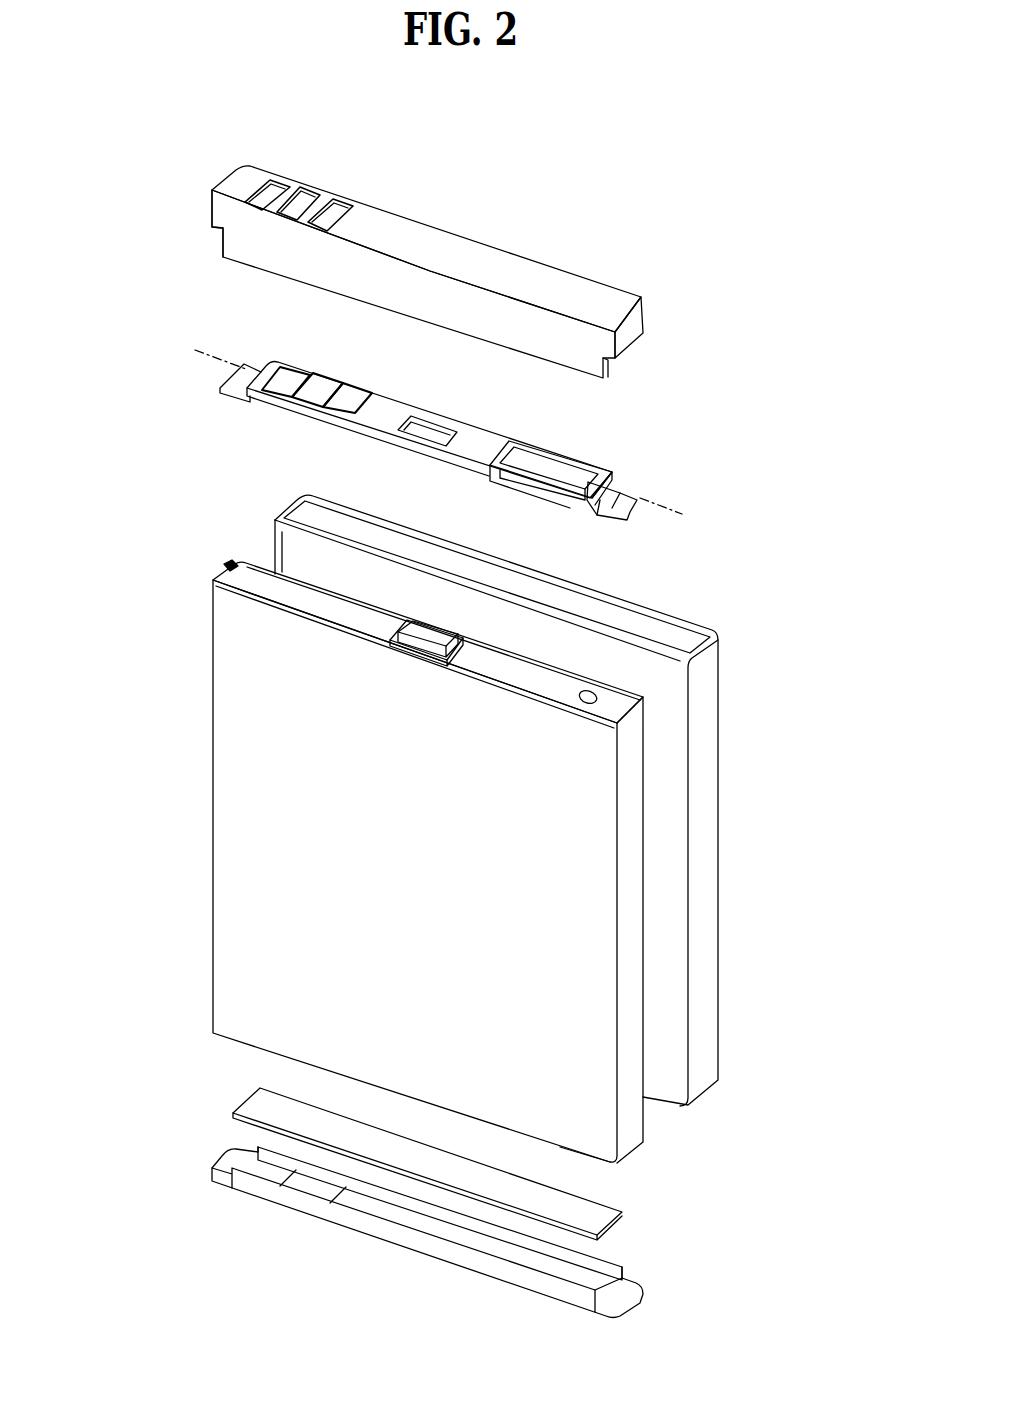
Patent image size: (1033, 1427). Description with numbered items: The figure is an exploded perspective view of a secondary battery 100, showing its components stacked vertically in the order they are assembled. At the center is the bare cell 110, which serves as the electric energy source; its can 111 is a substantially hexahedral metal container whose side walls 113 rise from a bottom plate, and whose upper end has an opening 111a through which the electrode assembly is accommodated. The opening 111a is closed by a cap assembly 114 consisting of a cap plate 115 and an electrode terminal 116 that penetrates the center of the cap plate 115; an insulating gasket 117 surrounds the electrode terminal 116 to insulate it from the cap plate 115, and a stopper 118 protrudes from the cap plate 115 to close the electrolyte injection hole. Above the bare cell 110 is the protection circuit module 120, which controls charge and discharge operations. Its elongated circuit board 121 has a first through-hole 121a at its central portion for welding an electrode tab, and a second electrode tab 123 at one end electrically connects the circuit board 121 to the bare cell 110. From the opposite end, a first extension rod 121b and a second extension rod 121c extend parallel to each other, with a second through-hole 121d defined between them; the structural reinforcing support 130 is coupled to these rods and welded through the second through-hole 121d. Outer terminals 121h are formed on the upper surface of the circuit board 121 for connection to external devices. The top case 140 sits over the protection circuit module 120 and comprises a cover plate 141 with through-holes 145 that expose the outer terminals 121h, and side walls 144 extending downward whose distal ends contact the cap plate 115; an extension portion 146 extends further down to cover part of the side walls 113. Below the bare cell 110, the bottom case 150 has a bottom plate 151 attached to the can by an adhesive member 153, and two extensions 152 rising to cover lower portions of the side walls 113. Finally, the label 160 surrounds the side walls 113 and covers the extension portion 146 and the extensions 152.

The secondary battery 100 is at (718, 151).
The bare cell 110 is at (417, 850).
The can 111 is at (212, 700).
The opening 111a is at (208, 574).
The side walls 113 is at (618, 1125).
The cap assembly 114 is at (226, 565).
The cap plate 115 is at (262, 590).
The electrode terminal 116 is at (434, 644).
The insulating gasket 117 is at (392, 648).
The stopper 118 is at (587, 700).
The protection circuit module 120 is at (420, 430).
The circuit board 121 is at (488, 433).
The first through-hole 121a is at (418, 418).
The first extension rod 121b is at (537, 480).
The second extension rod 121c is at (590, 462).
The second through-hole 121d is at (532, 445).
The outer terminals 121h is at (350, 404).
The second electrode tab 123 is at (214, 384).
The structural reinforcing support 130 is at (627, 521).
The top case 140 is at (429, 259).
The cover plate 141 is at (490, 245).
The side walls 144 is at (636, 329).
The through-holes 145 is at (338, 205).
The extension portion 146 is at (233, 238).
The bottom case 150 is at (427, 1203).
The bottom plate 151 is at (626, 1300).
The extensions 152 is at (335, 1178).
The adhesive member 153 is at (601, 1220).
The label 160 is at (710, 778).